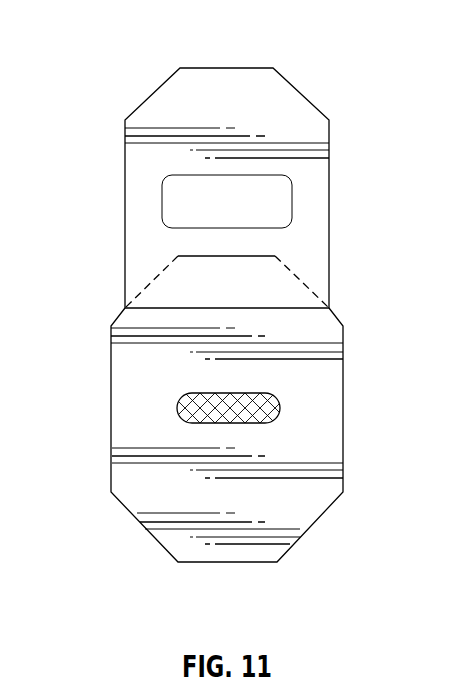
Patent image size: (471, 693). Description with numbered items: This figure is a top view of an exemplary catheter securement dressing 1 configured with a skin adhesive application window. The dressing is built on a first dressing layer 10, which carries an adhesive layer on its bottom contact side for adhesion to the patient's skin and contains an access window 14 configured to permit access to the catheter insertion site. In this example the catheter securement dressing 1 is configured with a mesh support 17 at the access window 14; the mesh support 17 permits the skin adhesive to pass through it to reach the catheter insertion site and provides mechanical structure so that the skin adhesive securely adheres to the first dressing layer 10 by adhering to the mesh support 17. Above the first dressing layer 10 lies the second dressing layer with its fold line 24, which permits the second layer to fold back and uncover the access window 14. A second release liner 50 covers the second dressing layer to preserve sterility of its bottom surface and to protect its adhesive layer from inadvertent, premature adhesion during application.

The catheter securement dressing 1 is at (105, 55).
The second release liner 50 is at (283, 92).
The fold line 24 is at (318, 302).
The first dressing layer 10 is at (303, 520).
The access window 14 is at (226, 408).
The mesh support 17 is at (187, 410).